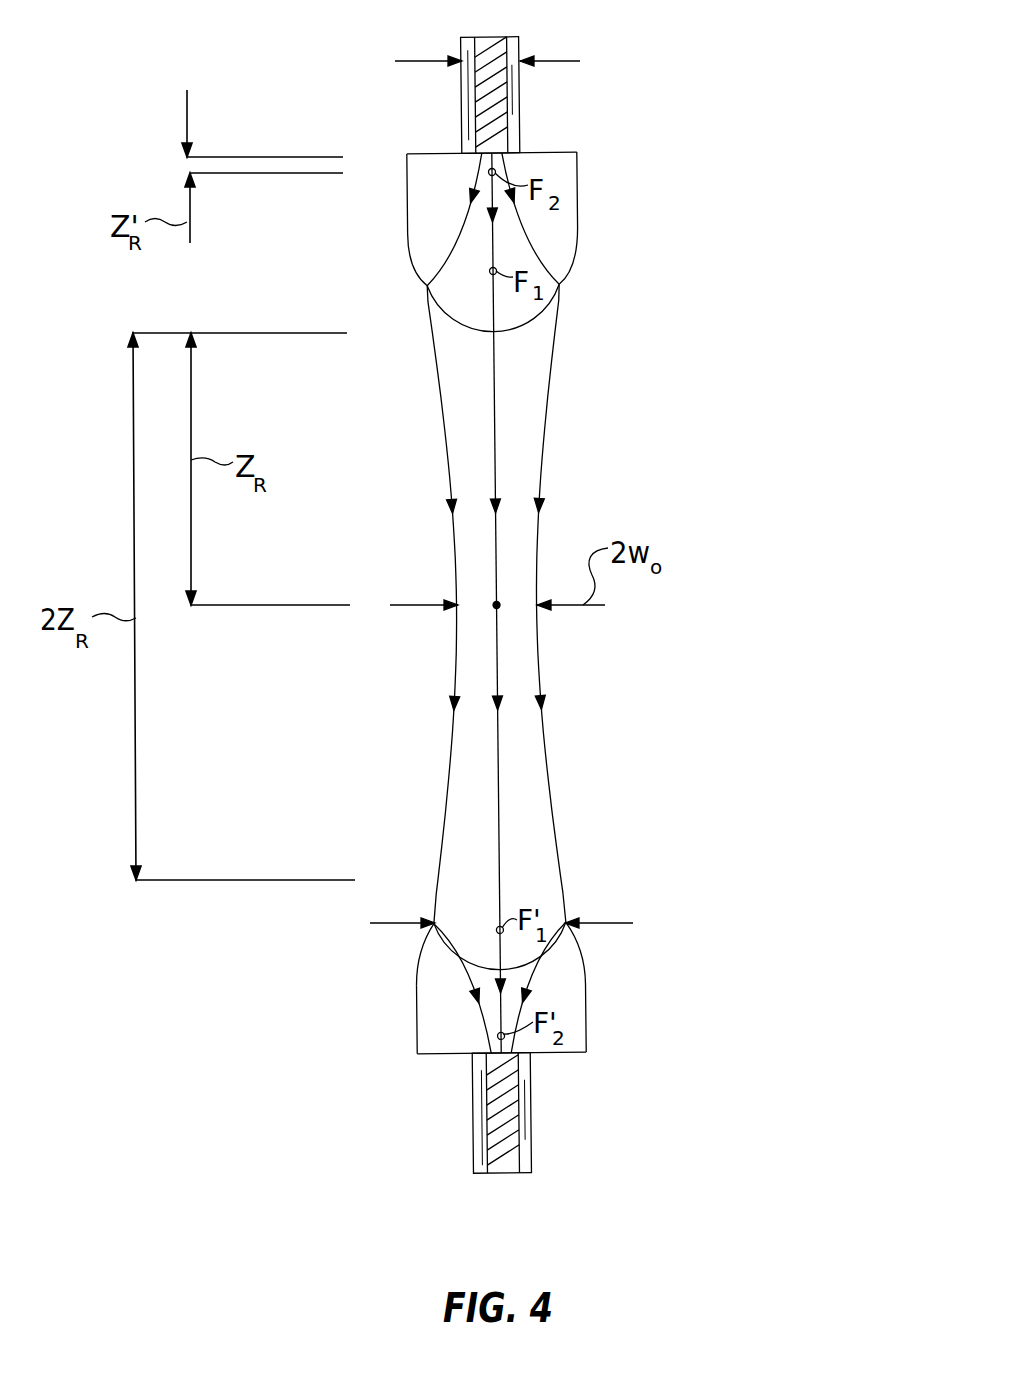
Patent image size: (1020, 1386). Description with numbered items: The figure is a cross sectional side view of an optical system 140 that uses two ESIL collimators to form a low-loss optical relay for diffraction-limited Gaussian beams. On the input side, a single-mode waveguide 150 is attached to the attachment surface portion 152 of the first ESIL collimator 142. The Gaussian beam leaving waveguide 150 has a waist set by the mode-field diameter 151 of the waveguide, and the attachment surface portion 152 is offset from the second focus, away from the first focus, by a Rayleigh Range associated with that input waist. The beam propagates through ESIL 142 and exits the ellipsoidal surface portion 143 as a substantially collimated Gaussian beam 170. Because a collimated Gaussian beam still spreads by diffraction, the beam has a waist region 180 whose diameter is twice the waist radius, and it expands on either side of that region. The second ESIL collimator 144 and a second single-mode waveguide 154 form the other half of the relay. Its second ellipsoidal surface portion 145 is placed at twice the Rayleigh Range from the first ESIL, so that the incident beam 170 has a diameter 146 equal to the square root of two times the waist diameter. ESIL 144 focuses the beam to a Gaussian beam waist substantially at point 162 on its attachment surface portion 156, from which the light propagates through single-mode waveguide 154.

The optical system 140 is at (238, 42).
The single-mode waveguide 150 is at (477, 103).
The mode-field diameter 151 is at (567, 61).
The attachment surface portion 152 is at (492, 153).
The ESIL collimator 142 is at (553, 220).
The ellipsoidal surface portion 143 is at (553, 227).
The substantially collimated Gaussian beam 170 is at (552, 415).
The Gaussian beam waist region 180 is at (497, 607).
The beam diameter 146 is at (611, 923).
The second ellipsoidal surface portion 145 is at (501, 954).
The ESIL collimator 144 is at (577, 1025).
The attachment surface portion 156 is at (501, 1053).
The point 162 is at (500, 1152).
The single-mode waveguide 154 is at (490, 1133).